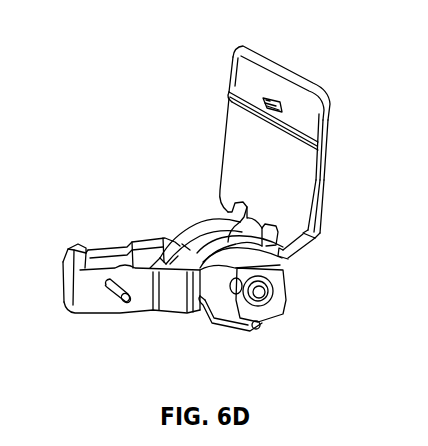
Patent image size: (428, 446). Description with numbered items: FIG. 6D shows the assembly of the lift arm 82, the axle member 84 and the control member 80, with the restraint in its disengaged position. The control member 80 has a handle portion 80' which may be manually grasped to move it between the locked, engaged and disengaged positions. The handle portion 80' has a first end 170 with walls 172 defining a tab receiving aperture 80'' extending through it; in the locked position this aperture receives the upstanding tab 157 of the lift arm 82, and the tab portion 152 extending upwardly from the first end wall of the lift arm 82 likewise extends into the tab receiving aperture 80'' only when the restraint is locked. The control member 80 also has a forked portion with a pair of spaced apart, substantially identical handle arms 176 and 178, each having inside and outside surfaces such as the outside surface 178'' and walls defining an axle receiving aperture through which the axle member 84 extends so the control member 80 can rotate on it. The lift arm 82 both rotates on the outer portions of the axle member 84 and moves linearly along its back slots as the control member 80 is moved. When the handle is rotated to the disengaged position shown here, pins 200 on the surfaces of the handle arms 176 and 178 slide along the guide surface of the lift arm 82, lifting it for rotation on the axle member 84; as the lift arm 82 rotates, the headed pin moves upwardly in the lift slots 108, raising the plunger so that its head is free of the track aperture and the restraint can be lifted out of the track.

The control member 80 is at (325, 219).
The handle portion 80' is at (353, 146).
The tab receiving aperture 80'' is at (289, 62).
The lift arm 82 is at (140, 312).
The axle member 84 is at (264, 300).
The lift slots 108 is at (116, 302).
The tab portion 152 is at (214, 326).
The upstanding tab 157 is at (86, 250).
The first end 170 is at (306, 76).
The walls 172 is at (230, 90).
The handle arm 176 is at (284, 256).
The handle arm 178 is at (189, 223).
The outside surface 178'' is at (180, 235).
The pins 200 is at (260, 327).